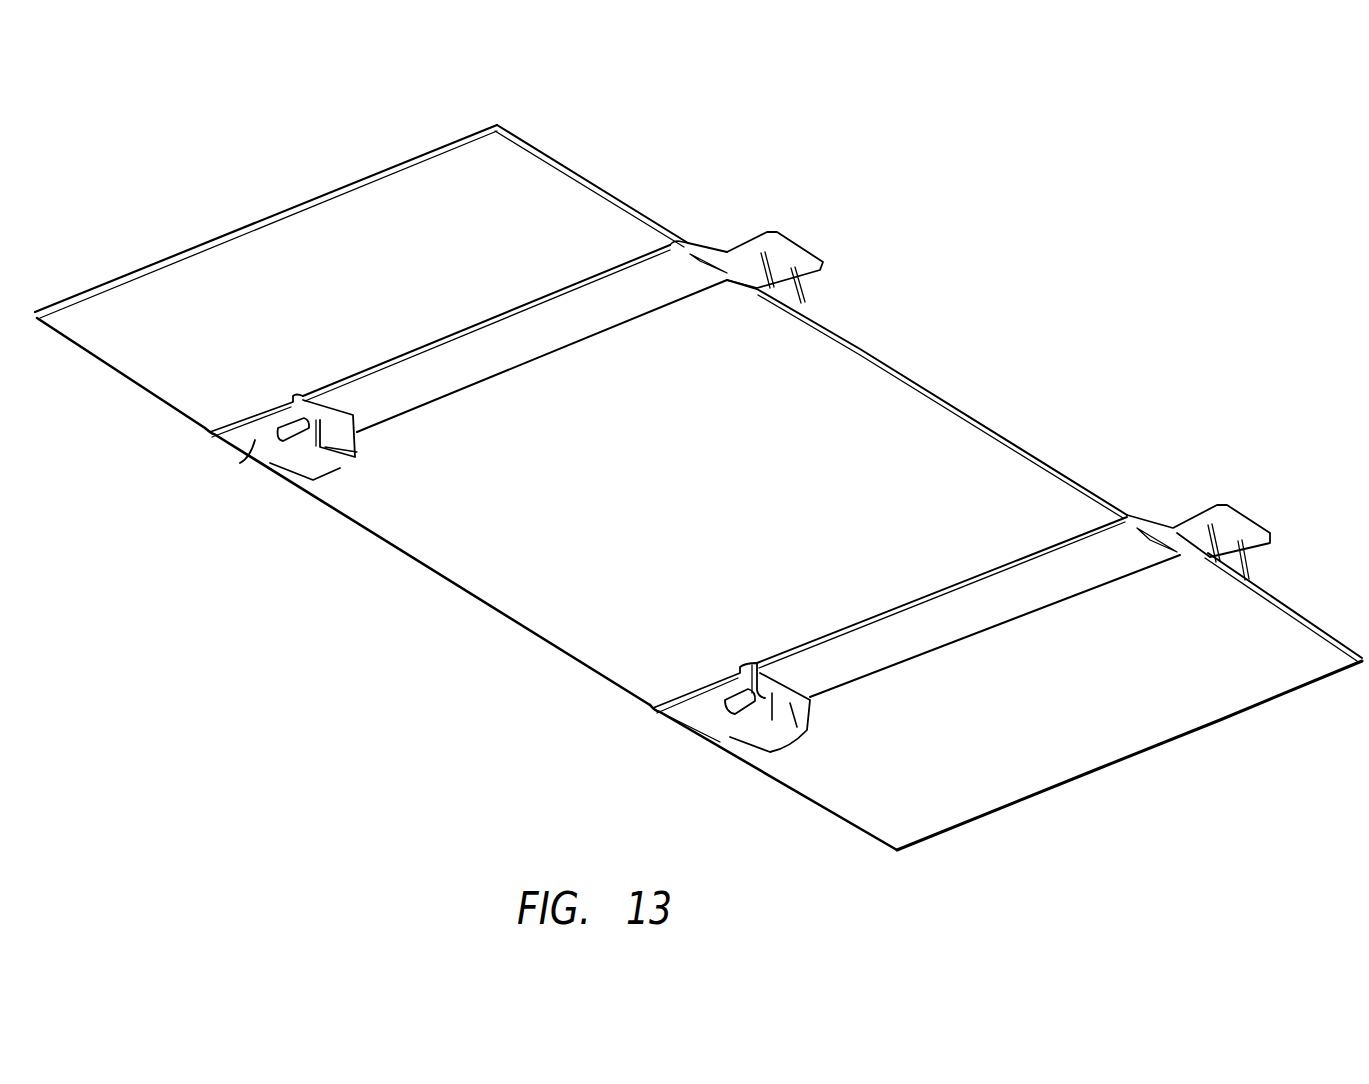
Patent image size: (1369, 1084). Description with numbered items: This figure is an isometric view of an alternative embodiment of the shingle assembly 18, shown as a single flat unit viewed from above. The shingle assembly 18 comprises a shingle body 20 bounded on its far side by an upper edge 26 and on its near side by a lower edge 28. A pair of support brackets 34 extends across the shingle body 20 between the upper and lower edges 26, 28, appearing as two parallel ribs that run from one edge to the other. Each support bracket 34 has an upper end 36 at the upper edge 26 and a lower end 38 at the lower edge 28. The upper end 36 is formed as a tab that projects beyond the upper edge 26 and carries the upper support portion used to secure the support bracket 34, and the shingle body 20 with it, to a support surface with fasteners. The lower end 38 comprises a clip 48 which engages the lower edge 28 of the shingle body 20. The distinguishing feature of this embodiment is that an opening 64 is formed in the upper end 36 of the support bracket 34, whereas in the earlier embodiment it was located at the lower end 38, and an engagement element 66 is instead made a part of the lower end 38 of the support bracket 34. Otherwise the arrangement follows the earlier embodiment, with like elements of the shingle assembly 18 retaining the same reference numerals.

The shingle assembly 18 is at (1066, 330).
The shingle body 20 is at (678, 492).
The upper edge 26 is at (888, 363).
The lower edge 28 is at (515, 620).
The support bracket 34 is at (521, 363).
The upper end 36 is at (840, 228).
The lower end 38 is at (253, 494).
The clip 48 is at (262, 442).
The opening 64 is at (710, 267).
The engagement element 66 is at (312, 470).